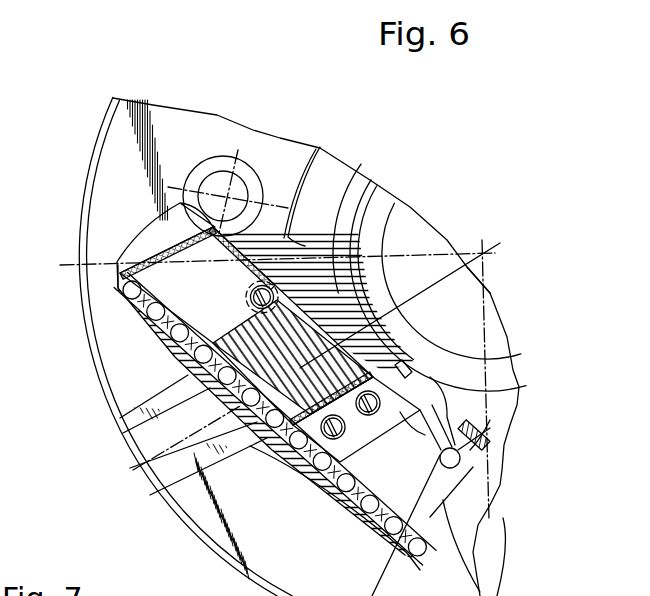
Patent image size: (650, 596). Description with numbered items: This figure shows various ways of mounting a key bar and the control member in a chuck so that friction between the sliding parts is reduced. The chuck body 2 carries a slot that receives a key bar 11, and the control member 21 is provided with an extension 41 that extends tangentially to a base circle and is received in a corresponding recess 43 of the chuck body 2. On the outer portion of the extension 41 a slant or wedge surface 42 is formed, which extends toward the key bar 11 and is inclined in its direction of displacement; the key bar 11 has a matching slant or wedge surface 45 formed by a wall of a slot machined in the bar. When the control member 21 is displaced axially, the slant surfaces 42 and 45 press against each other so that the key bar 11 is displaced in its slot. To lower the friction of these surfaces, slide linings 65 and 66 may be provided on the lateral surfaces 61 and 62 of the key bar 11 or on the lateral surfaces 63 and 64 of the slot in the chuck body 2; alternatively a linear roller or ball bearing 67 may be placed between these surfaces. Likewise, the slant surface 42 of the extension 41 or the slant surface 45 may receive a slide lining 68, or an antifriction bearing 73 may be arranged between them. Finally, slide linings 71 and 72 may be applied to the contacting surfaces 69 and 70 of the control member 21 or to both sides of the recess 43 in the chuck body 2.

The chuck body 2 is at (349, 235).
The control member 21 is at (385, 200).
The lateral surface of key bar 61 is at (272, 240).
The slide lining 66 is at (334, 280).
The slide lining 65 is at (197, 252).
The lateral surface of slot 63 is at (232, 258).
The lateral surface of slot 64 is at (165, 345).
The lateral surface of key bar 62 is at (150, 338).
The linear roller or ball bearing 67 is at (278, 455).
The key bar 11 is at (340, 477).
The slant or wedge surface 45 is at (366, 445).
The slide lining 68 is at (395, 435).
The recess 43 is at (407, 372).
The extension 41 is at (450, 420).
The contacting surface 70 is at (483, 417).
The slide lining 71 is at (510, 410).
The contacting surface 69 is at (476, 452).
The slide lining 72 is at (465, 450).
The slant or wedge surface 42 is at (470, 463).
The antifriction bearing 73 is at (465, 465).